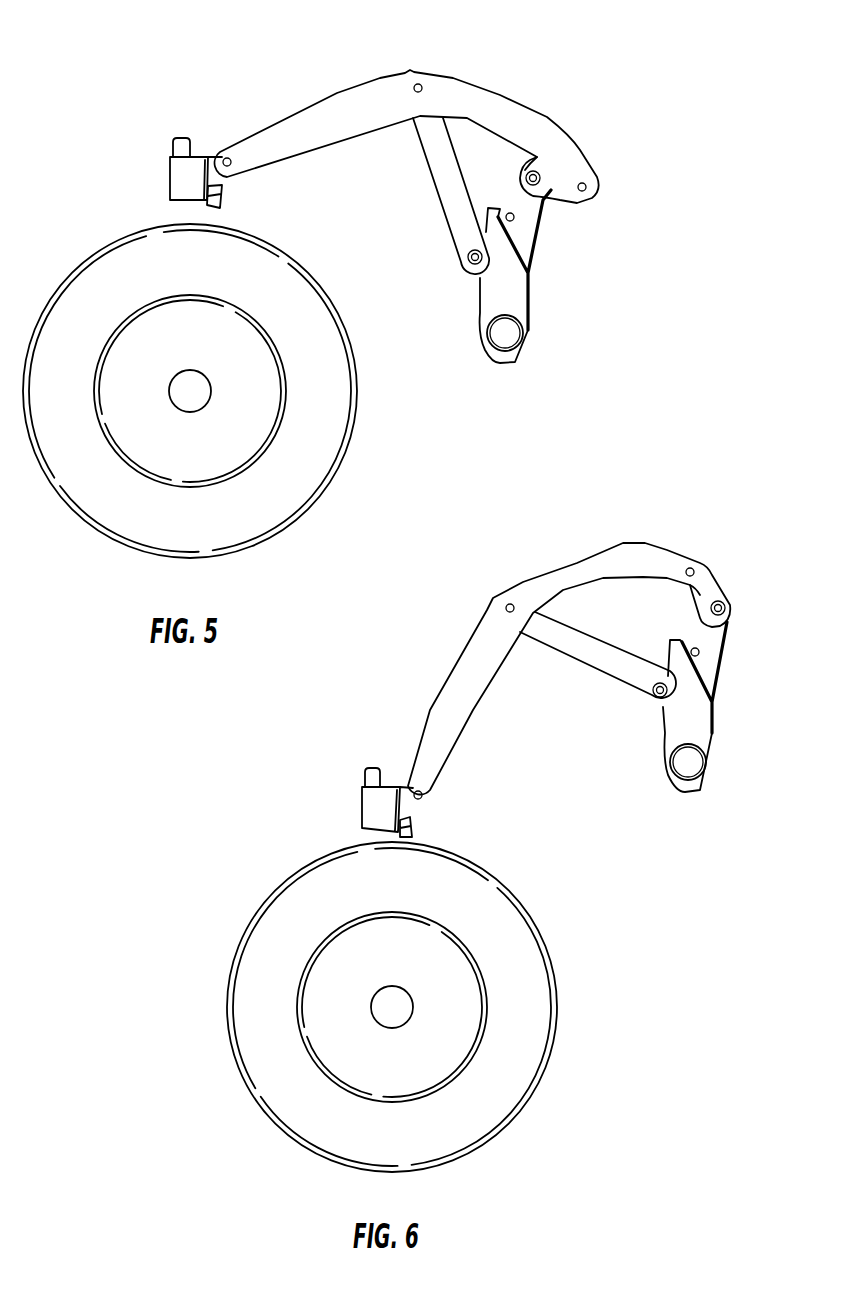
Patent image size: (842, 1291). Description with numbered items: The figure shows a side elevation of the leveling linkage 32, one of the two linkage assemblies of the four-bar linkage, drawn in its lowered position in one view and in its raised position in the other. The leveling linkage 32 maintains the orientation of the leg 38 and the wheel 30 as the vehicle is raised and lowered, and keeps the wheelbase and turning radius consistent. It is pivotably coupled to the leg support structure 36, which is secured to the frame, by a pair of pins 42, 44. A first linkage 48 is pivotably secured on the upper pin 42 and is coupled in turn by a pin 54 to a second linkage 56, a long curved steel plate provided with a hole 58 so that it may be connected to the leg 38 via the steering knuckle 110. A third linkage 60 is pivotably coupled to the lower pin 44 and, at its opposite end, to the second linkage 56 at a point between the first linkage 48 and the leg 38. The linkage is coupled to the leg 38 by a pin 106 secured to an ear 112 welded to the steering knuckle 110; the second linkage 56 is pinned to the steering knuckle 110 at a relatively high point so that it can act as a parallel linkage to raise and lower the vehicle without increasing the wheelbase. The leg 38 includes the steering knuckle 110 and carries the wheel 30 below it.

In FIG. 5, the wheel 30 is at (325, 435).
In FIG. 6, the wheel 30 is at (503, 1093).
In FIG. 5, the leveling linkage 32 is at (546, 85).
In FIG. 6, the leveling linkage 32 is at (719, 517).
In FIG. 5, the leg support structure 36 is at (560, 293).
In FIG. 6, the leg support structure 36 is at (740, 728).
In FIG. 5, the leg 38 is at (158, 205).
In FIG. 6, the leg 38 is at (325, 842).
In FIG. 5, the upper pin 42 is at (540, 175).
In FIG. 6, the upper pin 42 is at (726, 612).
In FIG. 5, the pin 44 is at (475, 262).
In FIG. 6, the pin 44 is at (660, 697).
In FIG. 5, the first linkage 48 is at (555, 200).
In FIG. 6, the first linkage 48 is at (710, 587).
In FIG. 5, the pin 54 is at (586, 186).
In FIG. 6, the pin 54 is at (694, 570).
In FIG. 5, the second linkage 56 is at (328, 110).
In FIG. 6, the second linkage 56 is at (455, 648).
In FIG. 5, the hole 58 is at (230, 158).
In FIG. 6, the hole 58 is at (424, 792).
In FIG. 5, the third linkage 60 is at (450, 213).
In FIG. 6, the third linkage 60 is at (586, 666).
In FIG. 5, the pin 106 is at (222, 160).
In FIG. 6, the pin 106 is at (410, 790).
In FIG. 5, the steering knuckle 110 is at (170, 160).
In FIG. 6, the steering knuckle 110 is at (362, 803).
In FIG. 5, the ear 112 is at (222, 178).
In FIG. 6, the ear 112 is at (417, 813).